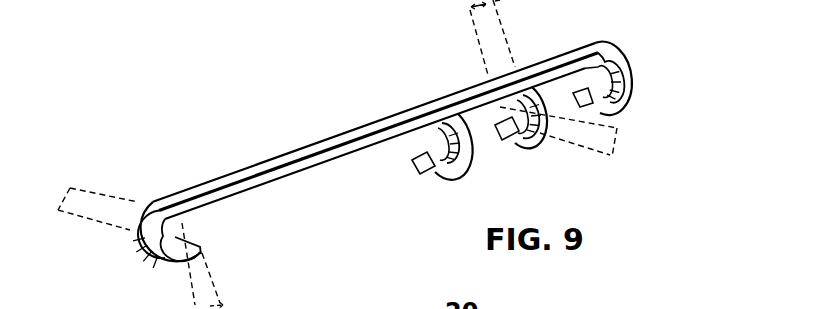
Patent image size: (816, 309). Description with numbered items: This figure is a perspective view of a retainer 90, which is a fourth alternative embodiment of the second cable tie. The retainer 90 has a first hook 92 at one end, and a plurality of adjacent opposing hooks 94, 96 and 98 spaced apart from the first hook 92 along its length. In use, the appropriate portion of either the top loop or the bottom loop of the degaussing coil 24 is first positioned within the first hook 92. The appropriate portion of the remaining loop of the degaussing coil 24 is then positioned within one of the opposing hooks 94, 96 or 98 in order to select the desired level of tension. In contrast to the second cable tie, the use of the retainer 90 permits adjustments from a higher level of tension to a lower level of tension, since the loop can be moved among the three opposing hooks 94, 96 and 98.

The retainer 90 is at (265, 163).
The first hook 92 is at (150, 263).
The opposing hook 94 is at (437, 170).
The opposing hook 96 is at (532, 142).
The opposing hook 98 is at (633, 76).
The degaussing coil 24 is at (114, 200).